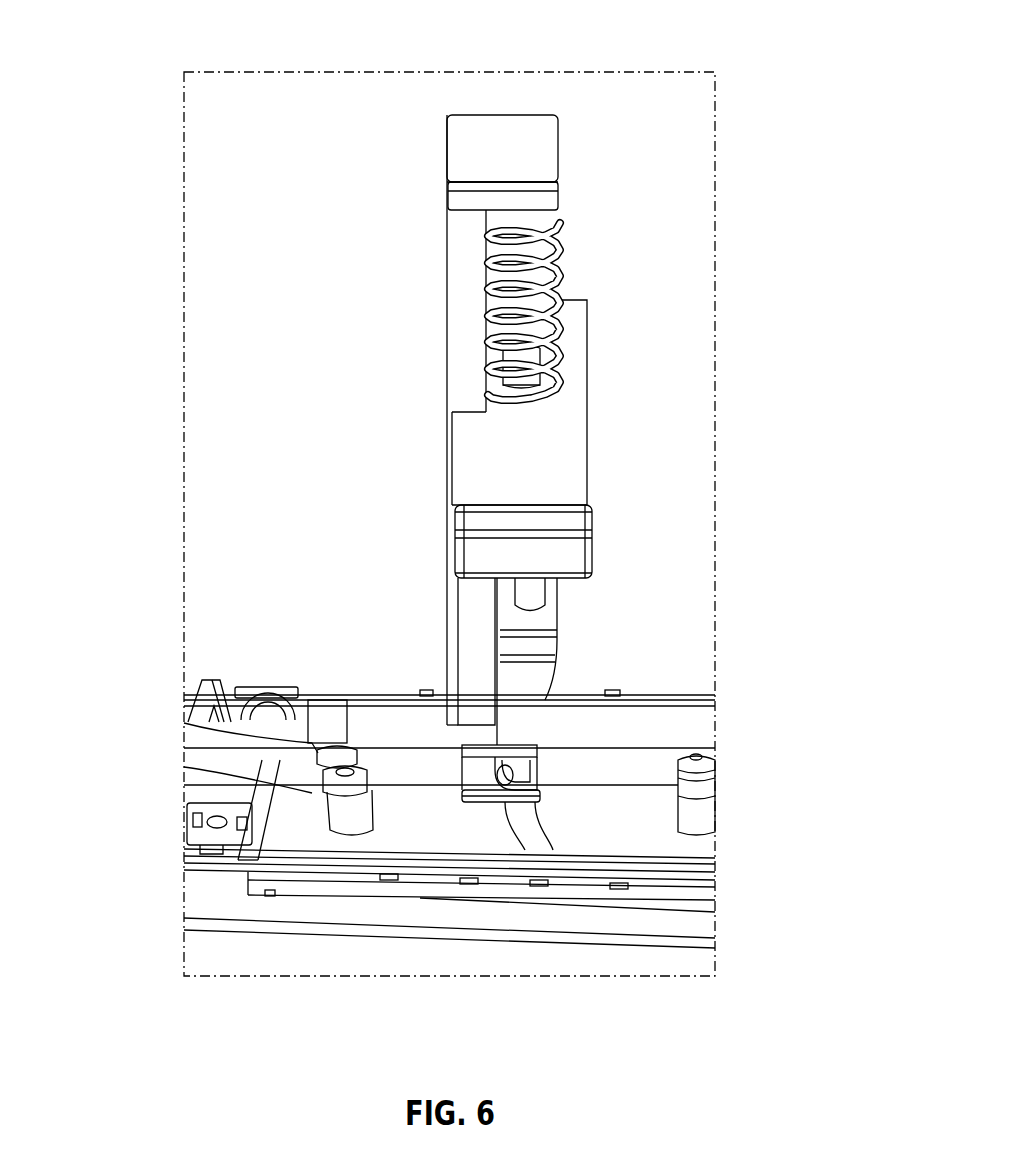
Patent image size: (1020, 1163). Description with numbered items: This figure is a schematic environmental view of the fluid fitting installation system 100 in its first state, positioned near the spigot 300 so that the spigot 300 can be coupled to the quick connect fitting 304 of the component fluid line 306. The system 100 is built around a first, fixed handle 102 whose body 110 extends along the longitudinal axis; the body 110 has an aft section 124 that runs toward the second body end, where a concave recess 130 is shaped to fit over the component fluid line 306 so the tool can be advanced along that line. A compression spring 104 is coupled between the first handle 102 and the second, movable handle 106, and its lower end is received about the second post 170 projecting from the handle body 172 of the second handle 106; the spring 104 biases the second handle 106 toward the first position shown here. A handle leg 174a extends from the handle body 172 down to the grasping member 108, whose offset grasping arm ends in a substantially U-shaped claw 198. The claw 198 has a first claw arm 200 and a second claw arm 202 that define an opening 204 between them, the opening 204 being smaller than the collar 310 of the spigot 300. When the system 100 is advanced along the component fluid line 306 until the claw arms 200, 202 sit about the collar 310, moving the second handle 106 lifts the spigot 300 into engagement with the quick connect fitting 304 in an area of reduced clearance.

The fluid fitting installation system 100 is at (434, 98).
The first handle 102 is at (437, 430).
The spring 104 is at (566, 250).
The second handle 106 is at (598, 428).
The grasping member 108 is at (562, 772).
The body 110 is at (420, 236).
The aft section 124 is at (468, 603).
The recess 130 is at (420, 690).
The second post 170 is at (555, 355).
The handle body 172 is at (598, 405).
The handle leg 174a is at (528, 593).
The claw 198 is at (482, 810).
The first claw arm 200 is at (492, 795).
The second claw arm 202 is at (462, 770).
The opening 204 is at (492, 770).
The spigot 300 is at (323, 815).
The quick connect fitting 304 is at (300, 700).
The component fluid line 306 is at (682, 727).
The collar 310 is at (332, 762).